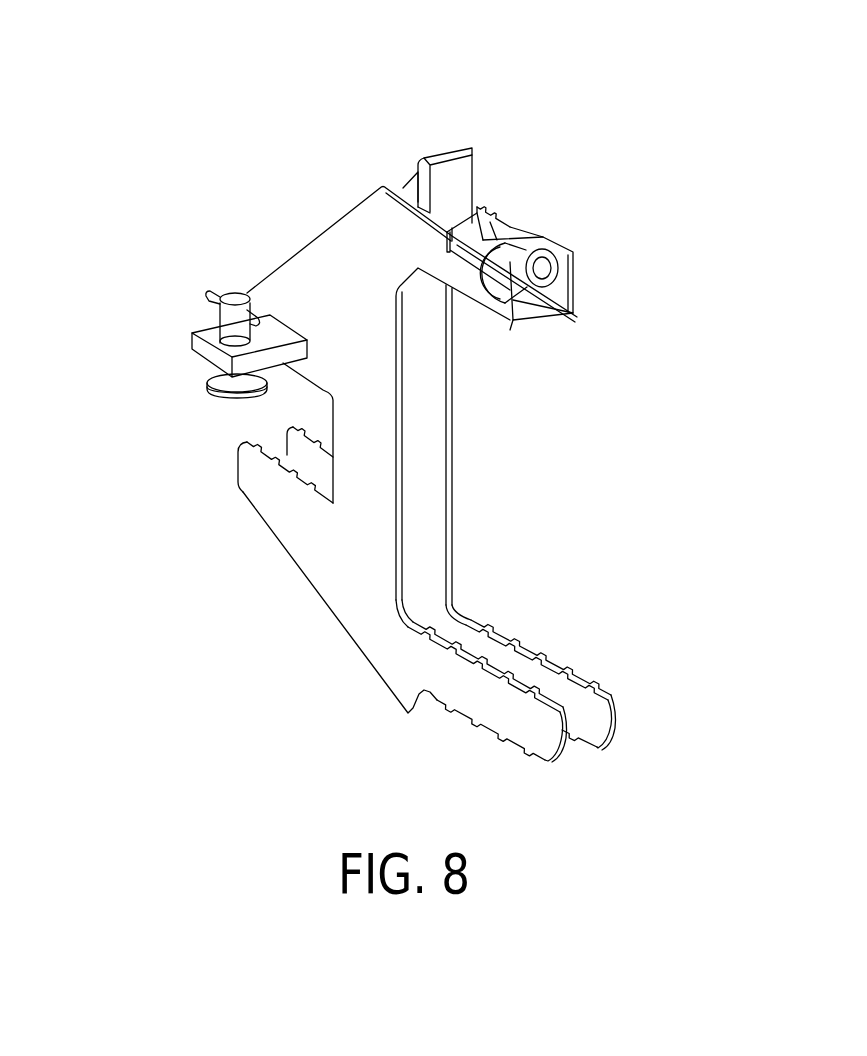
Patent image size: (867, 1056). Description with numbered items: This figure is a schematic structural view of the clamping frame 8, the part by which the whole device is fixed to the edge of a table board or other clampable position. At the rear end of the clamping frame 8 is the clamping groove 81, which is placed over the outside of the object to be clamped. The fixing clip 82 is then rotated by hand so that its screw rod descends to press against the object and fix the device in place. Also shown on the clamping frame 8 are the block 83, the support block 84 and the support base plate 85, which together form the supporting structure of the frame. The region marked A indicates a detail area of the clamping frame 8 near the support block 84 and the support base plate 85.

The clamping frame 8 is at (314, 236).
The clamping groove 81 is at (251, 488).
The fixing clip 82 is at (186, 372).
The block 83 is at (468, 147).
The support block 84 is at (575, 226).
The support base plate 85 is at (591, 292).
The detail region A is at (549, 320).